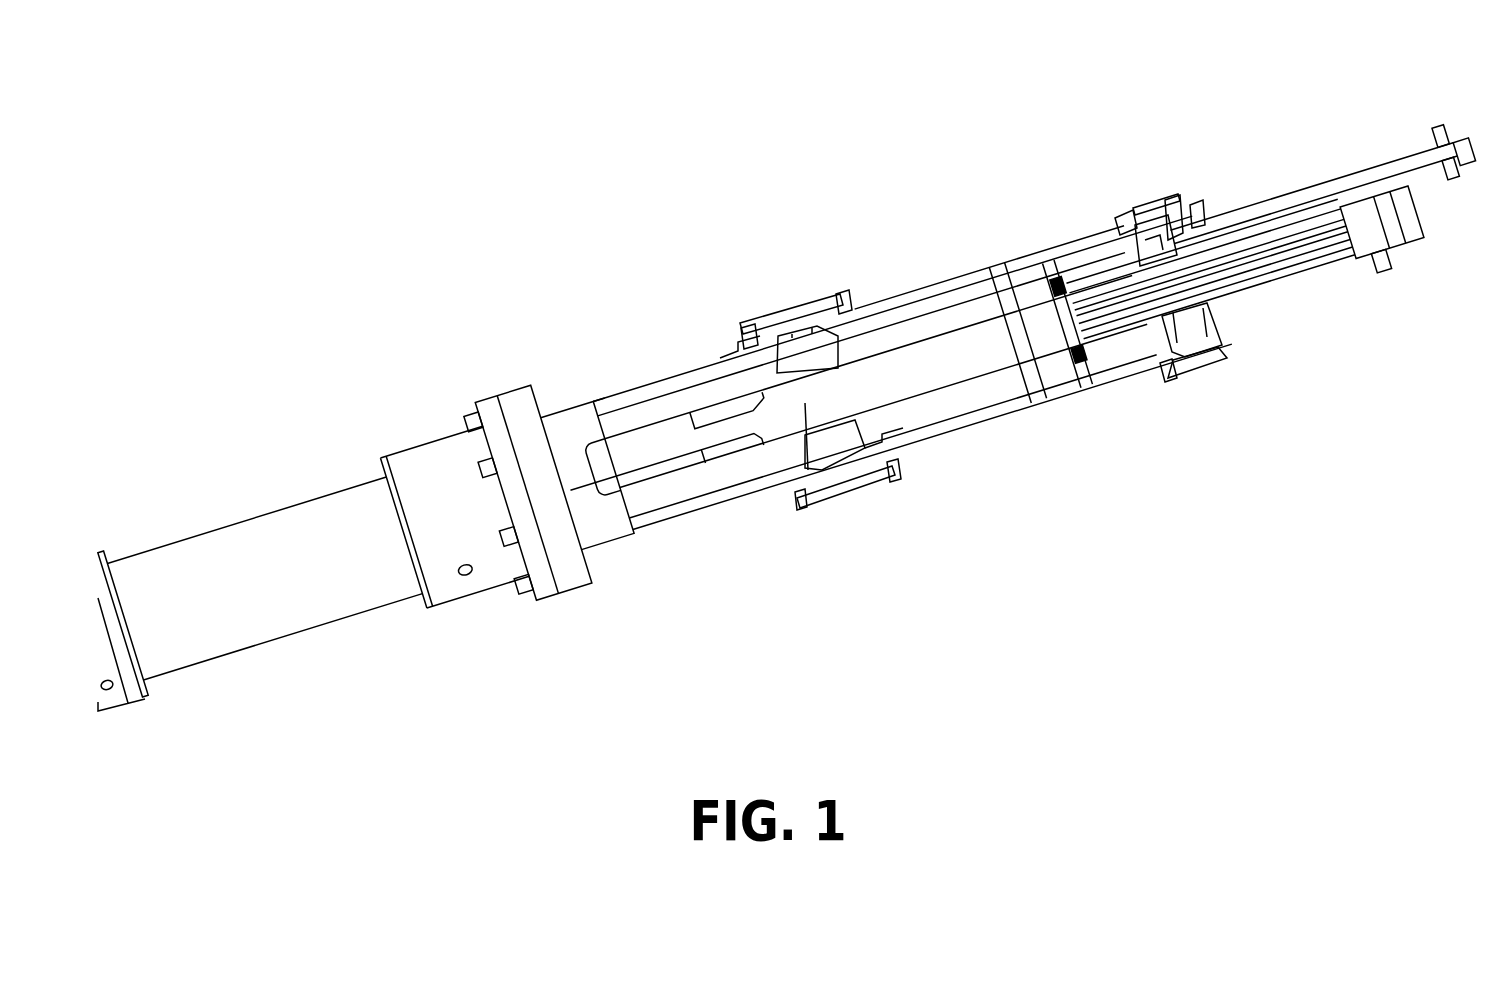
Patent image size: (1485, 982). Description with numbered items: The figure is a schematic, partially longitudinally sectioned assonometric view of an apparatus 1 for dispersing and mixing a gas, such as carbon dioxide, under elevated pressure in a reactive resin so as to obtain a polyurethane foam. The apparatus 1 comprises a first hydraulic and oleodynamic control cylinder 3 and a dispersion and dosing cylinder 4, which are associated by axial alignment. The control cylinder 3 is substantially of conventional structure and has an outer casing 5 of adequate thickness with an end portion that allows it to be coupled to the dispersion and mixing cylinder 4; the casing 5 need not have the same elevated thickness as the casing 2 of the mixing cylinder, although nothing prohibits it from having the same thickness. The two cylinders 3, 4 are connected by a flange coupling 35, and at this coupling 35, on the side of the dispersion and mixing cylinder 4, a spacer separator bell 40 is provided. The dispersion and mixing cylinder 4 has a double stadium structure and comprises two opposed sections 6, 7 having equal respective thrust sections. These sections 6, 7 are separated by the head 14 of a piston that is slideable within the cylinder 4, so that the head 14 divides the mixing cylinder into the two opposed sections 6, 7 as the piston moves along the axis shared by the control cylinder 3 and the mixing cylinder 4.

The apparatus 1 is at (687, 304).
The casing of the mixing cylinder 2 is at (925, 437).
The control cylinder 3 is at (310, 489).
The dispersion and dosing cylinder 4 is at (994, 435).
The outer casing 5 is at (338, 568).
The section 6 is at (915, 330).
The section 7 is at (1103, 270).
The head of piston 14 is at (1057, 260).
The flange coupling 35 is at (558, 451).
The spacer separator bell 40 is at (634, 546).